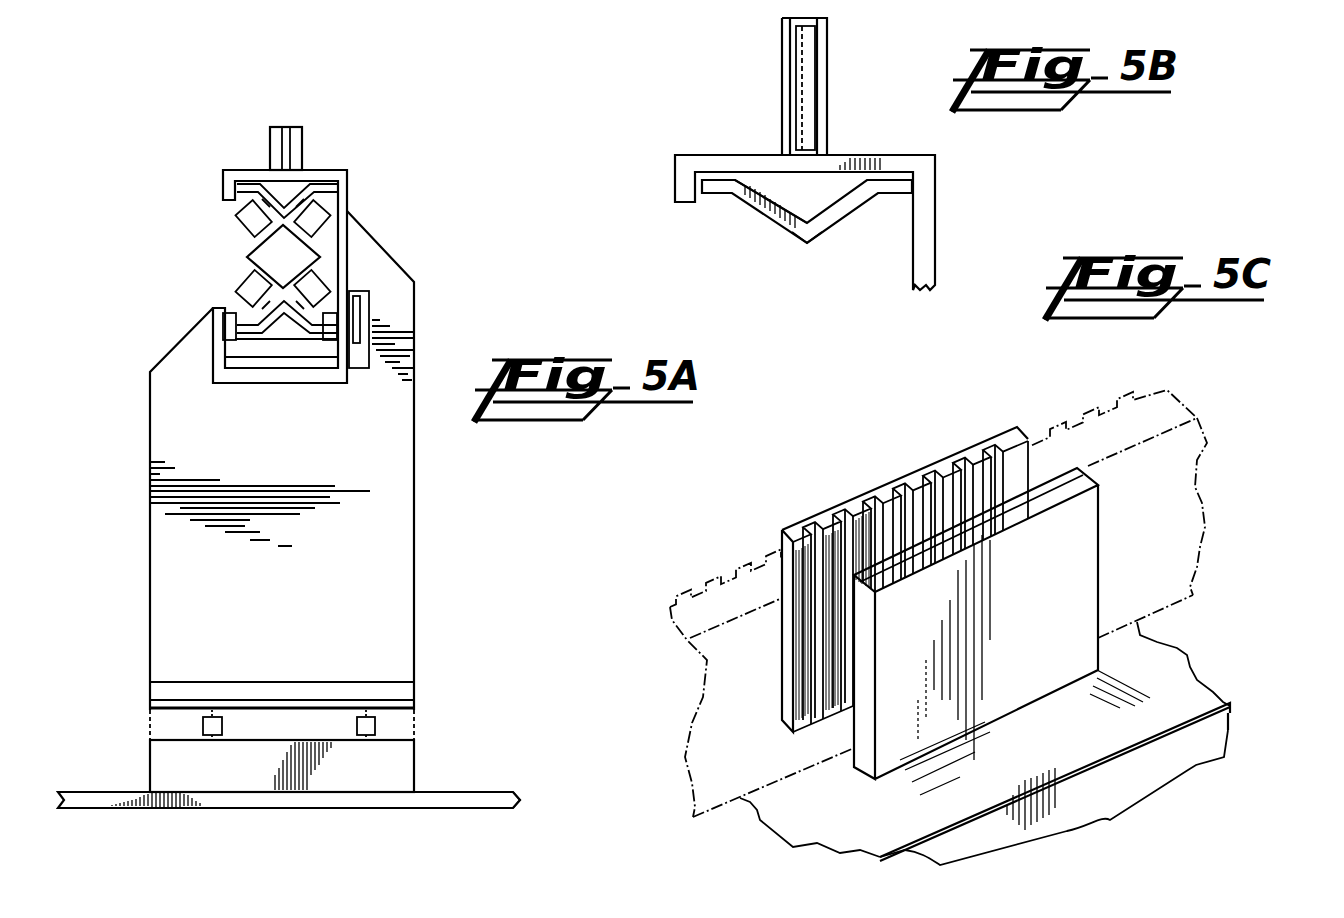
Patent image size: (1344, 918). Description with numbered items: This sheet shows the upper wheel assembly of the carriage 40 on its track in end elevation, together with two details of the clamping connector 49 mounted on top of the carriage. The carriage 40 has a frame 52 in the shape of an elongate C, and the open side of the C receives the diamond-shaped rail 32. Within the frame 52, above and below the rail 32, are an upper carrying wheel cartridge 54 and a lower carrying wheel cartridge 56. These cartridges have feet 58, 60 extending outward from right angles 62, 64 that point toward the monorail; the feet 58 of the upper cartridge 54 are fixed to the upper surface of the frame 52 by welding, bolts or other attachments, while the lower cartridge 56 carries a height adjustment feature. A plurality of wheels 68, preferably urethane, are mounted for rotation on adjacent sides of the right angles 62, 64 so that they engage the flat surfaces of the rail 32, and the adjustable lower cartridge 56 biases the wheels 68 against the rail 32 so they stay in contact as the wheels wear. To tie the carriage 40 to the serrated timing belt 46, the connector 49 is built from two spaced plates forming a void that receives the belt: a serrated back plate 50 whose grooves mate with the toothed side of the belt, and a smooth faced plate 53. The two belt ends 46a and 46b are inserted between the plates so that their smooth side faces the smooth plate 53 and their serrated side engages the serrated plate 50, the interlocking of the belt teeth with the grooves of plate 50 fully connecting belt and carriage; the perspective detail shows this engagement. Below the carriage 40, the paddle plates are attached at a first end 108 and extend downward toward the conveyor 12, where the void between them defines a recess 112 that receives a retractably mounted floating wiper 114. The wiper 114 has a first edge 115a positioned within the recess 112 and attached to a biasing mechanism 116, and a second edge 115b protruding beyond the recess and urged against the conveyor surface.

In FIG. 5A, the conveyor 12 is at (484, 773).
In FIG. 5A, the rail 32 is at (266, 232).
In FIG. 5A, the carriage 40 is at (193, 174).
In FIG. 5A, the serrated timing belt 46 is at (289, 126).
In FIG. 5B, the serrated timing belt 46 is at (808, 45).
In FIG. 5C, the belt end 46a is at (742, 556).
In FIG. 5C, the belt end 46b is at (1115, 428).
In FIG. 5A, the clamping connector 49 is at (268, 117).
In FIG. 5B, the clamping connector 49 is at (767, 32).
In FIG. 5A, the serrated back plate 50 is at (270, 146).
In FIG. 5B, the serrated back plate 50 is at (787, 57).
In FIG. 5C, the serrated back plate 50 is at (900, 462).
In FIG. 5A, the frame 52 is at (347, 178).
In FIG. 5B, the frame 52 is at (944, 225).
In FIG. 5C, the frame 52 is at (1113, 743).
In FIG. 5A, the smooth faced plate 53 is at (303, 149).
In FIG. 5B, the smooth faced plate 53 is at (827, 112).
In FIG. 5C, the smooth faced plate 53 is at (1082, 597).
In FIG. 5A, the upper carrying wheel cartridge 54 is at (327, 188).
In FIG. 5B, the upper carrying wheel cartridge 54 is at (757, 215).
In FIG. 5A, the lower carrying wheel cartridge 56 is at (238, 306).
In FIG. 5A, the feet 58 is at (240, 186).
In FIG. 5B, the feet 58 is at (889, 188).
In FIG. 5A, the feet 60 is at (312, 325).
In FIG. 5B, the right angle 62 is at (805, 243).
In FIG. 5A, the right angle 64 is at (277, 328).
In FIG. 5A, the wheels 68 is at (245, 214).
In FIG. 5A, the first end 108 is at (197, 322).
In FIG. 5A, the recess 112 is at (403, 722).
In FIG. 5A, the floating wiper 114 is at (403, 763).
In FIG. 5A, the first edge 115a is at (153, 737).
In FIG. 5A, the second edge 115b is at (177, 789).
In FIG. 5A, the biasing mechanism 116 is at (203, 724).